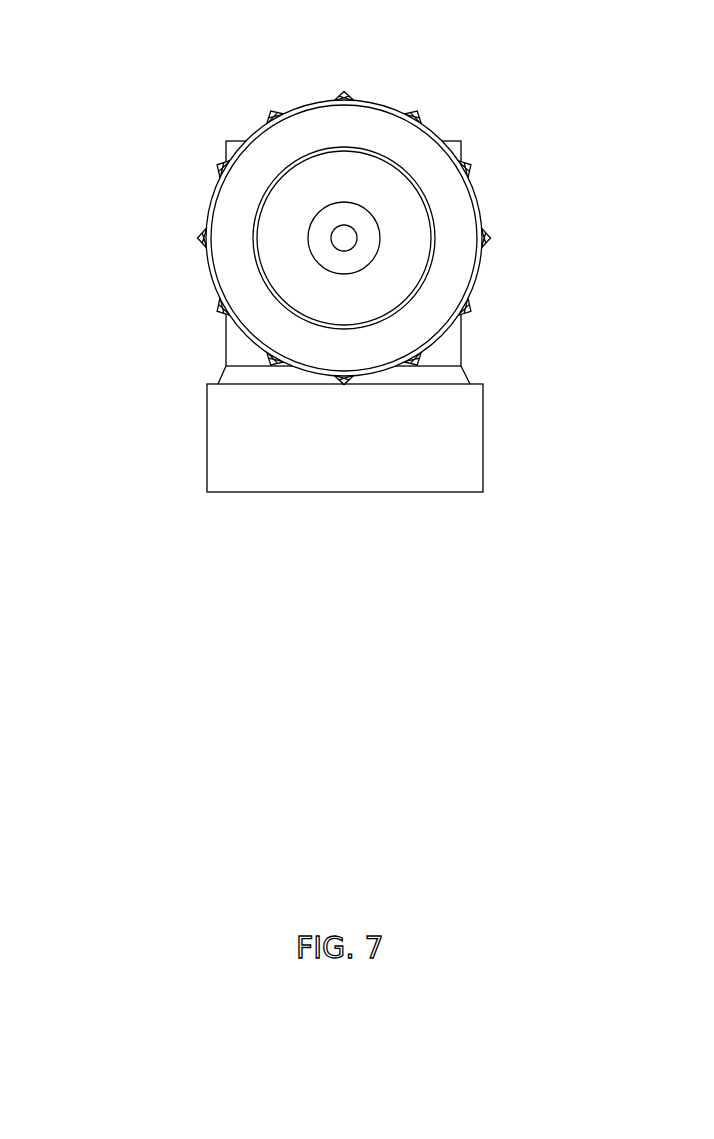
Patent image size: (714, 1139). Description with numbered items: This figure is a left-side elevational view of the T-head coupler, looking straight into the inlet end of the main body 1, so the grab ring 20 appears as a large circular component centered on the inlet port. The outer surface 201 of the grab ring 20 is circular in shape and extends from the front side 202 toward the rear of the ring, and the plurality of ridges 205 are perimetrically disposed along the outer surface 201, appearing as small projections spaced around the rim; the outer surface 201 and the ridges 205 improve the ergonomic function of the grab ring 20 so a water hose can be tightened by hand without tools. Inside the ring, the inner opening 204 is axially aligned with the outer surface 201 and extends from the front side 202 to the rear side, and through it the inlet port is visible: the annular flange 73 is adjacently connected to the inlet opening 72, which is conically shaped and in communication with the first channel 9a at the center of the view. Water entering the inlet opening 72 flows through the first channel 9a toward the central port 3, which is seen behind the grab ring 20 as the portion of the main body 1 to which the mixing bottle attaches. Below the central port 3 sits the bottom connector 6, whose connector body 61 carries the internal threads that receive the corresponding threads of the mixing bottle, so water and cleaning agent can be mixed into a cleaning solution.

The main body 1 is at (341, 325).
The grab ring 20 is at (336, 199).
The outer surface 201 is at (212, 190).
The front side 202 is at (373, 120).
The inner opening 204 is at (412, 165).
The plurality of ridges 205 is at (477, 317).
The first channel 9a is at (348, 238).
The annular flange 73 is at (270, 237).
The inlet opening 72 is at (313, 257).
The central port 3 is at (228, 355).
The bottom connector 6 is at (278, 473).
The connector body 61 is at (427, 469).